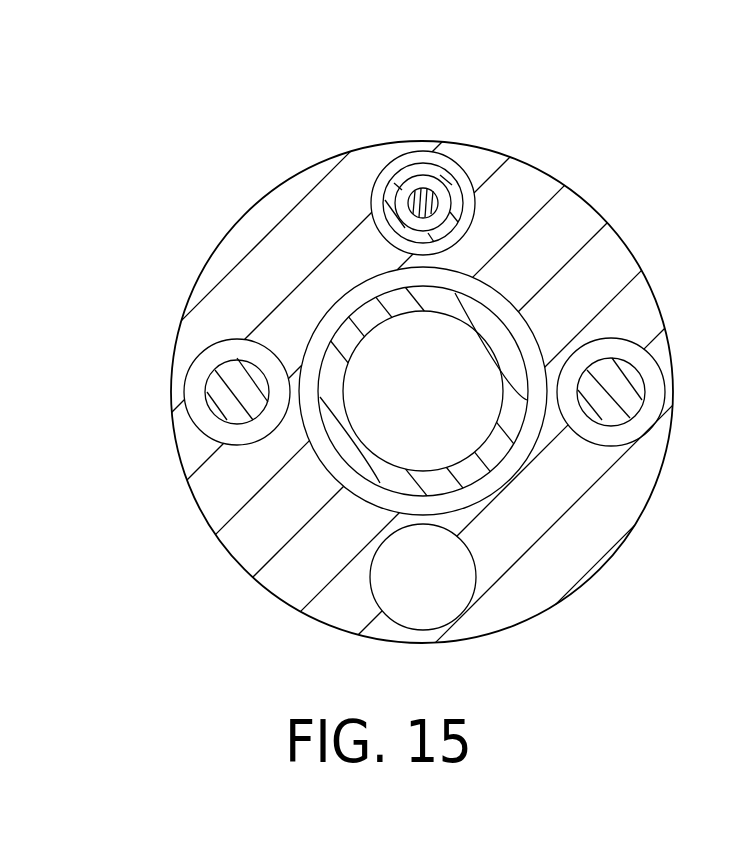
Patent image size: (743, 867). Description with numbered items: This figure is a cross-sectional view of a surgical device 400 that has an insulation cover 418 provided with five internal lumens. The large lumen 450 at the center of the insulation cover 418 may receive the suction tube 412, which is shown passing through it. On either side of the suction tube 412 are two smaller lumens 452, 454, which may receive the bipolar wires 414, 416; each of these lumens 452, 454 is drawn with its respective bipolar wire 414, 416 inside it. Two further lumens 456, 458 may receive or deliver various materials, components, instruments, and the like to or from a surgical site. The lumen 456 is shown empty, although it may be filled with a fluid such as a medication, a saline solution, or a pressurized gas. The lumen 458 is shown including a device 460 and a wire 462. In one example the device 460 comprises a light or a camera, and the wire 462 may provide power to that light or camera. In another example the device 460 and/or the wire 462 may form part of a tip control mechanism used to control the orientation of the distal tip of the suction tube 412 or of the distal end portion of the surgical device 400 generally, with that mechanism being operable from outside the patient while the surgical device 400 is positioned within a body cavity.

The surgical device 400 is at (563, 128).
The suction tube 412 is at (467, 293).
The insulation cover 418 is at (613, 227).
The lumen 450 is at (358, 482).
The lumen 452 is at (211, 352).
The bipolar wire 414 is at (213, 382).
The lumen 454 is at (604, 350).
The bipolar wire 416 is at (627, 370).
The lumen 458 is at (400, 165).
The device 460 is at (432, 170).
The wire 462 is at (435, 200).
The lumen 456 is at (427, 610).